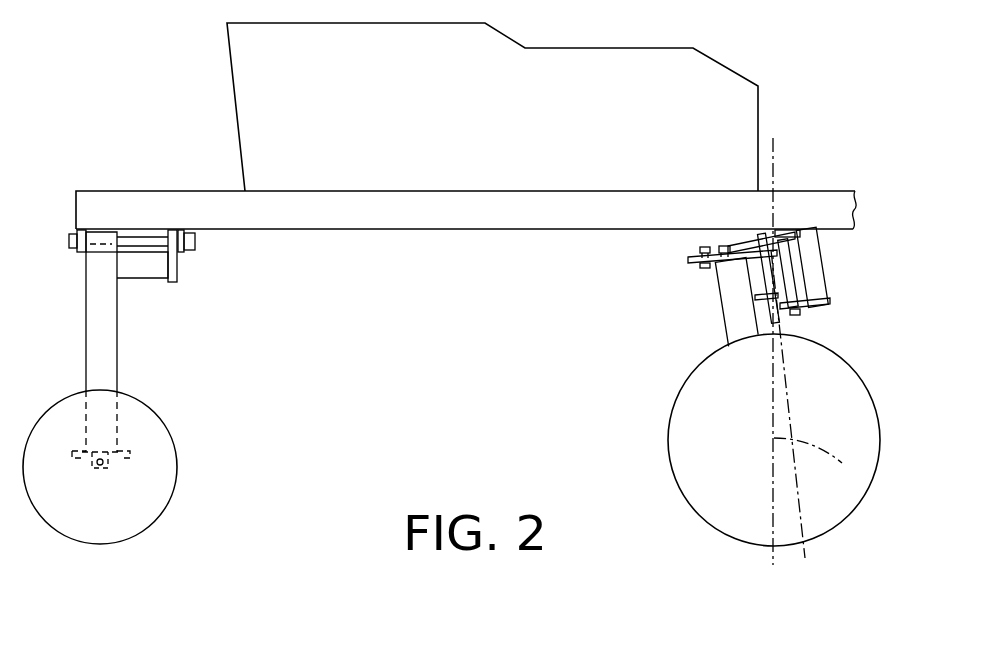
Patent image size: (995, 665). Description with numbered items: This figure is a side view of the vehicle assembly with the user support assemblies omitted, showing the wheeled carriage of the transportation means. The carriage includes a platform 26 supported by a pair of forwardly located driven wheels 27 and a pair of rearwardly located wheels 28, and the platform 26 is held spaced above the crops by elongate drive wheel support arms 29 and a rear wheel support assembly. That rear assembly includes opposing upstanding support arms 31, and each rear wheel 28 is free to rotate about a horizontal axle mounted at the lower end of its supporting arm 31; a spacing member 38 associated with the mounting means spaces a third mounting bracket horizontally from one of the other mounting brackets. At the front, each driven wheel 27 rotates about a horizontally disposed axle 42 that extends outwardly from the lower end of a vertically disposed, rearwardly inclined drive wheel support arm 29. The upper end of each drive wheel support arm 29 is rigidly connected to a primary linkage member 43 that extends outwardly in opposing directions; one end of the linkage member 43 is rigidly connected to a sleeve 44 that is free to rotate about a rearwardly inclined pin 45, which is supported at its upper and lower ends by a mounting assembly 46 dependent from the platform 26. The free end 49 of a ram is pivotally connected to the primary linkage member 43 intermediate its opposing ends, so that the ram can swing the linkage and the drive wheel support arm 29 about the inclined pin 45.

The platform 26 is at (452, 214).
The driven wheel 27 is at (830, 531).
The rear wheel 28 is at (153, 495).
The drive wheel support arm 29 is at (733, 298).
The support arm 31 is at (86, 337).
The spacing member 38 is at (144, 267).
The axle 42 is at (842, 463).
The primary linkage member 43 is at (712, 265).
The sleeve 44 is at (782, 262).
The pin 45 is at (797, 316).
The mounting assembly 46 is at (812, 282).
The free end 49 is at (723, 246).